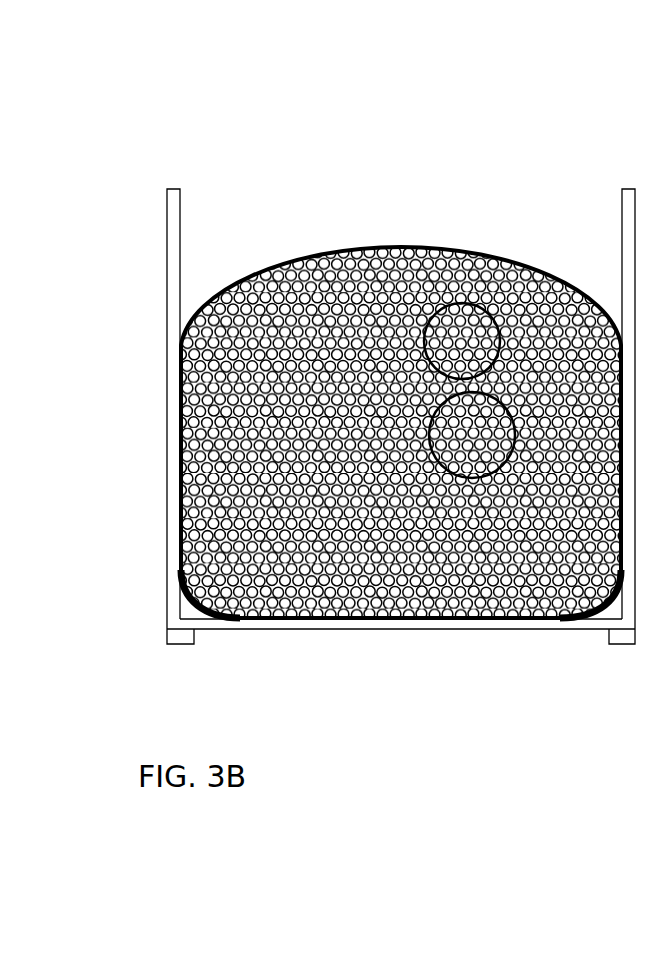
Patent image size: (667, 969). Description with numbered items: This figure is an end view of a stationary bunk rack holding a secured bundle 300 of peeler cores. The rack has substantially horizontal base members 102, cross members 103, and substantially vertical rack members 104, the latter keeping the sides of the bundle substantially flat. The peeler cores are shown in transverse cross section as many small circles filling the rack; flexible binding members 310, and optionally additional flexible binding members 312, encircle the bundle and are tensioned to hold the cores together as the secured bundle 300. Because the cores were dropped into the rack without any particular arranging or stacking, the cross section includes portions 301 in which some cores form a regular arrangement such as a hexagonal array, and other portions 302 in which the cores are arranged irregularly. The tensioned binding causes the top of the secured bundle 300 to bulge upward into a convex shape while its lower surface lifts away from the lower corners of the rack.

The secured bundle 300 is at (430, 108).
The flexible binding member 310 is at (401, 364).
The additional flexible binding member 312 is at (343, 240).
The portion of regular arrangement 301 is at (468, 303).
The portion of irregular arrangement 302 is at (473, 478).
The vertical rack member 104 is at (175, 225).
The cross member 103 is at (268, 628).
The base member 102 is at (180, 643).